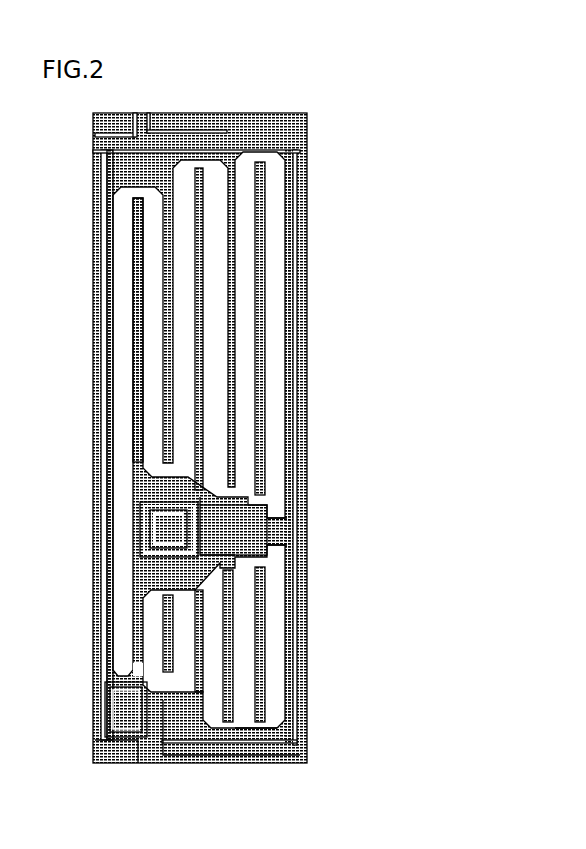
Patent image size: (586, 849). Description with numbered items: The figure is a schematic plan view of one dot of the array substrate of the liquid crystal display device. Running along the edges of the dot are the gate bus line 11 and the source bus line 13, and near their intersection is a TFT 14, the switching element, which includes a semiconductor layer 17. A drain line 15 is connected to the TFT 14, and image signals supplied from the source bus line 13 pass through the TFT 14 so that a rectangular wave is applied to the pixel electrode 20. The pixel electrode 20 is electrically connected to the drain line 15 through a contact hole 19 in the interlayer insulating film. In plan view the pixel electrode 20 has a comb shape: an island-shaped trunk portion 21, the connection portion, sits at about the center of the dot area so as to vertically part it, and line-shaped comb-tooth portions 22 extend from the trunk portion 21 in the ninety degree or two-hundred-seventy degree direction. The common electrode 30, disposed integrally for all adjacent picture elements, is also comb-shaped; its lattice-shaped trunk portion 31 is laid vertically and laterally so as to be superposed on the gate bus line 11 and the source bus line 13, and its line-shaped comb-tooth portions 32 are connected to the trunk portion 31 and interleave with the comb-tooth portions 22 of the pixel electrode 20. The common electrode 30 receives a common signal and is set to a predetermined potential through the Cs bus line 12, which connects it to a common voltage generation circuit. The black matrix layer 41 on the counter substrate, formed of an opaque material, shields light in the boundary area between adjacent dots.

The gate bus line 11 is at (258, 750).
The Cs bus line 12 is at (278, 530).
The source bus line 13 is at (97, 592).
The TFT 14 is at (140, 763).
The drain line 15 is at (140, 676).
The semiconductor layer 17 is at (173, 745).
The contact hole 19 is at (152, 528).
The pixel electrode 20 is at (335, 442).
The trunk portion 21 is at (273, 513).
The comb-tooth portion 22 is at (258, 445).
The common electrode 30 is at (275, 447).
The trunk portion 31 is at (287, 288).
The comb-tooth portion 32 is at (232, 257).
The black matrix layer 41 is at (272, 725).